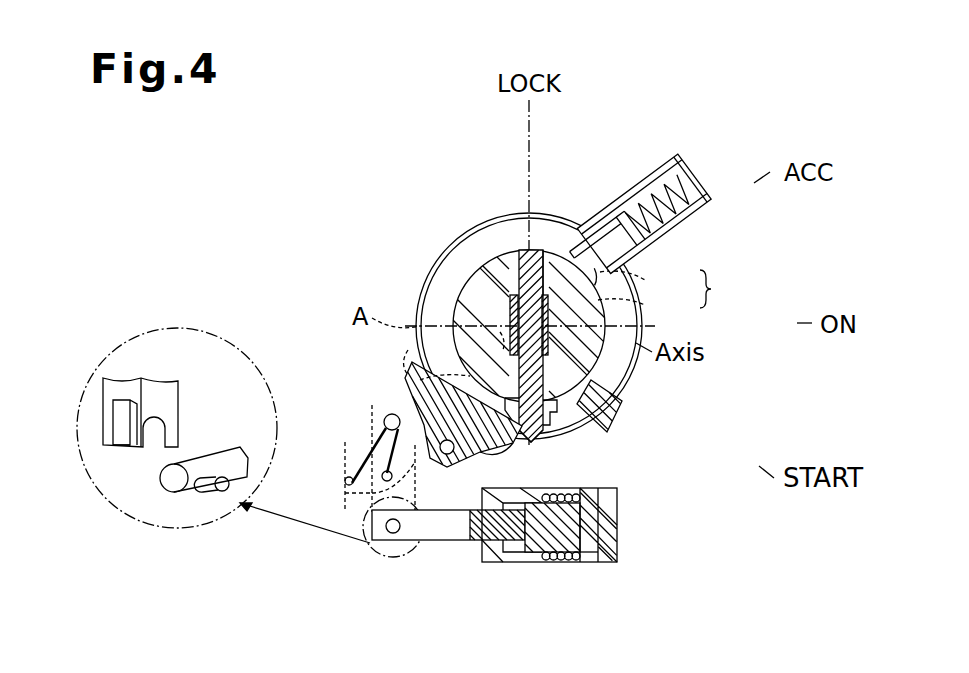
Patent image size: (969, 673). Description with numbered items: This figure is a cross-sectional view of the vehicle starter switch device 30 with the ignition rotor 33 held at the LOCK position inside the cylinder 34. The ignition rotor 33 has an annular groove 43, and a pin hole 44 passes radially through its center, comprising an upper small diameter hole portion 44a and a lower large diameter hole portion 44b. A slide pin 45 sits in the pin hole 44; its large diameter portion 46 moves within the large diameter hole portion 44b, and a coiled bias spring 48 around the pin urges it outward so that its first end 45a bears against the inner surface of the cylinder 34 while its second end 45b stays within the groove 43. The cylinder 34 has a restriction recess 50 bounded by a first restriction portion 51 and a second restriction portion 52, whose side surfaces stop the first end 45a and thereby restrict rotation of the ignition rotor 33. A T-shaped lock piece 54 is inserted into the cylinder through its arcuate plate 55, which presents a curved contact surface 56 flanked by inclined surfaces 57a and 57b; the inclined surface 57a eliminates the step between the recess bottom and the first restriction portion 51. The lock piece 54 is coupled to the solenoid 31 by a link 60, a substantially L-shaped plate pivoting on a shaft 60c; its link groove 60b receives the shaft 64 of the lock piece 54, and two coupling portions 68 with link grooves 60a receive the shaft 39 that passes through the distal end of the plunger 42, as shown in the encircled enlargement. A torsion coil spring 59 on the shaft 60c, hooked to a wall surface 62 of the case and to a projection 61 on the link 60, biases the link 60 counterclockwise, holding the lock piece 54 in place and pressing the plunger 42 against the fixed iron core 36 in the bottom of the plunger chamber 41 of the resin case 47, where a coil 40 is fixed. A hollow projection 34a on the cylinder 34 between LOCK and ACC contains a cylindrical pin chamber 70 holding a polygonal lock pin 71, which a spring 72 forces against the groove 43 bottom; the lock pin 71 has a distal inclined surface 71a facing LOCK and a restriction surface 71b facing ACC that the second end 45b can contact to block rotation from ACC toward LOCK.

The vehicle starter switch device 30 is at (290, 552).
The solenoid 31 is at (618, 522).
The ignition rotor 33 is at (458, 300).
The cylinder 34 is at (436, 258).
The hollow projection 34a is at (674, 156).
The fixed iron core 36 is at (602, 500).
The shaft 39 is at (205, 492).
The coil 40 is at (560, 560).
The plunger chamber 41 is at (520, 553).
The plunger 42 is at (242, 446).
The annular groove 43 is at (460, 247).
The pin hole 44 is at (724, 289).
The small diameter hole portion 44a is at (630, 279).
The large diameter hole portion 44b is at (630, 300).
The slide pin 45 is at (520, 252).
The first end 45a is at (533, 444).
The second end 45b is at (546, 252).
The large diameter portion 46 is at (549, 350).
The case 47 is at (598, 562).
The bias spring 48 is at (514, 308).
The restriction recess 50 is at (558, 418).
The first restriction portion 51 is at (512, 395).
The second restriction portion 52 is at (628, 388).
The lock piece 54 is at (436, 370).
The arcuate plate 55 is at (400, 368).
The contact surface 56 is at (508, 336).
The inclined surface 57a is at (522, 441).
The inclined surface 57b is at (417, 363).
The torsion coil spring 59 is at (366, 450).
The link 60 is at (343, 496).
The link groove 60a is at (103, 425).
The link groove 60b is at (447, 468).
The shaft 60c is at (385, 410).
The projection 61 is at (390, 472).
The wall surface 62 is at (340, 442).
The shaft 64 is at (441, 443).
The coupling portions 68 is at (132, 450).
The pin chamber 70 is at (703, 208).
The lock pin 71 is at (612, 208).
The inclined surface 71a is at (582, 228).
The restriction surface 71b is at (622, 250).
The spring 72 is at (672, 182).